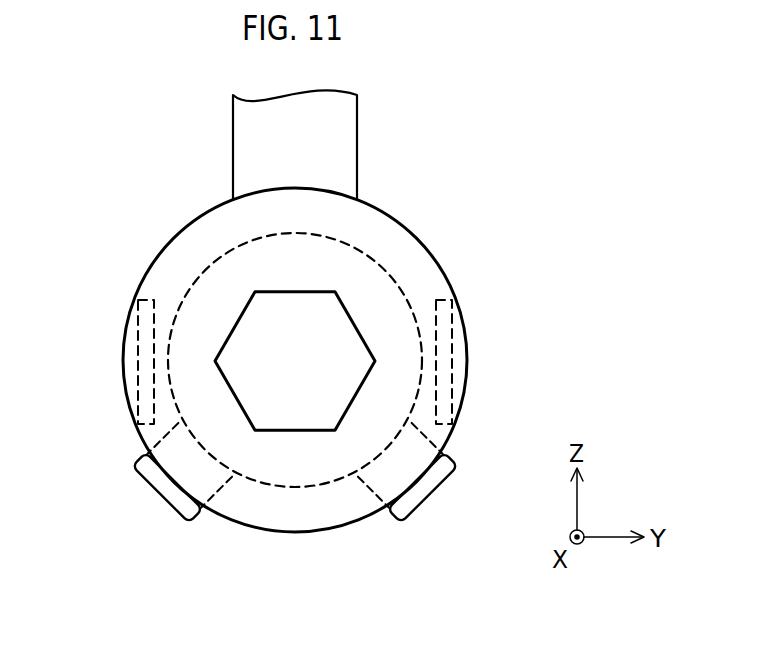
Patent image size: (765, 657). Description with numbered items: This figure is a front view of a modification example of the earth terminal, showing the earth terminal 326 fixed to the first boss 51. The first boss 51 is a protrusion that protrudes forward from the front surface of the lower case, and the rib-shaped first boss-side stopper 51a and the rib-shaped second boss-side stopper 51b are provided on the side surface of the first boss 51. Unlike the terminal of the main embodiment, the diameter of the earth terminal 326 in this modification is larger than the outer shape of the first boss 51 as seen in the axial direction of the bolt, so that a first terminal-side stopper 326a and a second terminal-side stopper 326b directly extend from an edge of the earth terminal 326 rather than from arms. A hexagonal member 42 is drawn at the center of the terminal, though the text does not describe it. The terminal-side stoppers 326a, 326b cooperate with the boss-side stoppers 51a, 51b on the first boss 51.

The earth terminal 326 is at (185, 238).
The first terminal-side stopper 326a is at (445, 352).
The second terminal-side stopper 326b is at (143, 357).
The hexagonal shaft 42 is at (335, 325).
The first boss 51 is at (303, 488).
The first boss-side stopper 51a is at (412, 498).
The second boss-side stopper 51b is at (173, 492).